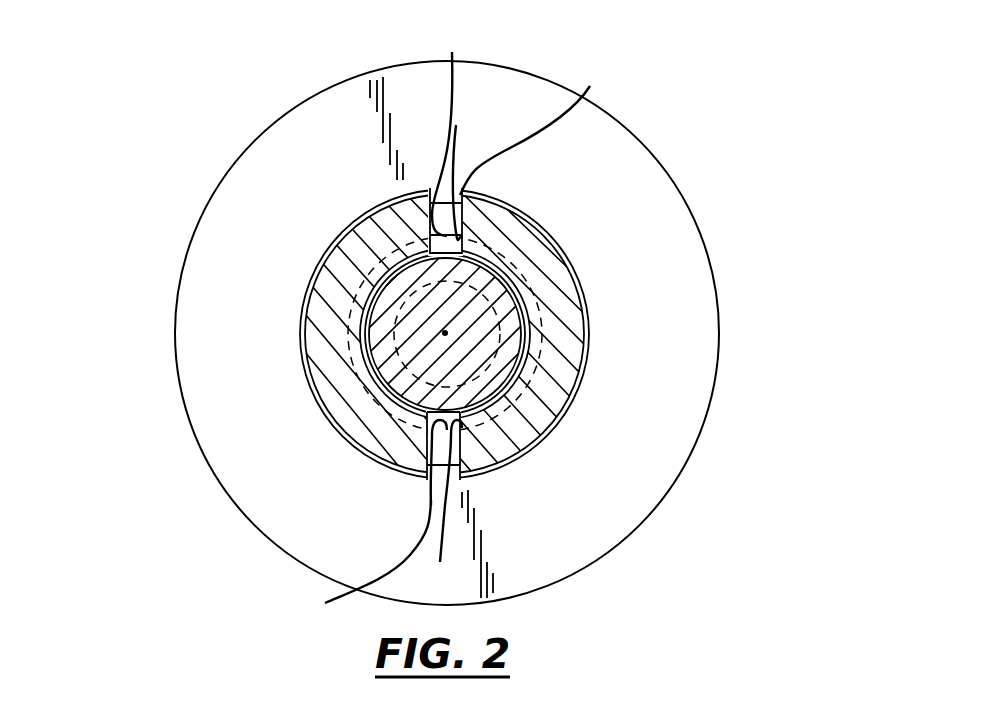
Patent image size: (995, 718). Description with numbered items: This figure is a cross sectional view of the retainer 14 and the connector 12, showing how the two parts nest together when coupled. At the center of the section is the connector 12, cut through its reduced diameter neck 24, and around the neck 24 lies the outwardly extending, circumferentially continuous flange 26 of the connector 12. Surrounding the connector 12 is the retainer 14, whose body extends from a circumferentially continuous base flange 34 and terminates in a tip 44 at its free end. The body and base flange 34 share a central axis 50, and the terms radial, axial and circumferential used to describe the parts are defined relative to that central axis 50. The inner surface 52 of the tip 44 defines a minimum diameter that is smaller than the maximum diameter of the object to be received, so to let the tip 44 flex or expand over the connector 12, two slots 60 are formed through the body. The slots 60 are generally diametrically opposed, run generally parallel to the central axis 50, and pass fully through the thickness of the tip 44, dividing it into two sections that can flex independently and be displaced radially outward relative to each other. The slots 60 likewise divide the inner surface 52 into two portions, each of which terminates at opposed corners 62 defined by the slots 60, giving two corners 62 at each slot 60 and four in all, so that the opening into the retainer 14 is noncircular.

The connector 12 is at (392, 403).
The retainer 14 is at (686, 199).
The neck 24 is at (515, 337).
The flange 26 is at (484, 255).
The base flange 34 is at (626, 163).
The tip 44 is at (562, 388).
The central axis 50 is at (445, 333).
The inner surface 52 is at (398, 258).
The slots 60 is at (457, 343).
The corners 62 is at (447, 302).